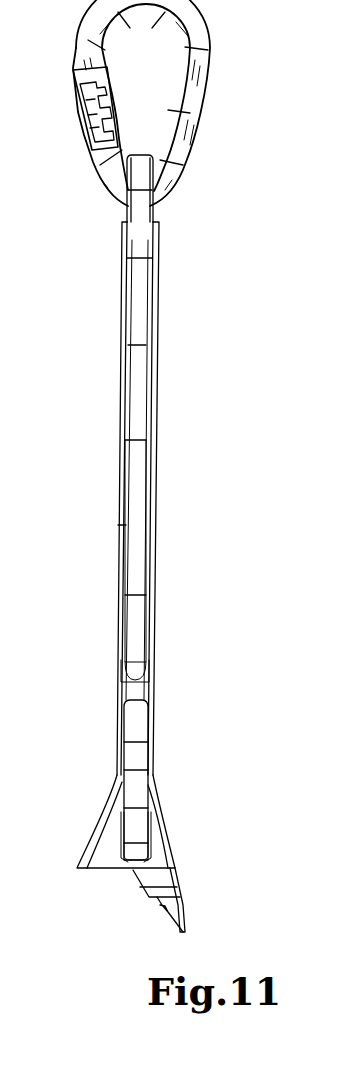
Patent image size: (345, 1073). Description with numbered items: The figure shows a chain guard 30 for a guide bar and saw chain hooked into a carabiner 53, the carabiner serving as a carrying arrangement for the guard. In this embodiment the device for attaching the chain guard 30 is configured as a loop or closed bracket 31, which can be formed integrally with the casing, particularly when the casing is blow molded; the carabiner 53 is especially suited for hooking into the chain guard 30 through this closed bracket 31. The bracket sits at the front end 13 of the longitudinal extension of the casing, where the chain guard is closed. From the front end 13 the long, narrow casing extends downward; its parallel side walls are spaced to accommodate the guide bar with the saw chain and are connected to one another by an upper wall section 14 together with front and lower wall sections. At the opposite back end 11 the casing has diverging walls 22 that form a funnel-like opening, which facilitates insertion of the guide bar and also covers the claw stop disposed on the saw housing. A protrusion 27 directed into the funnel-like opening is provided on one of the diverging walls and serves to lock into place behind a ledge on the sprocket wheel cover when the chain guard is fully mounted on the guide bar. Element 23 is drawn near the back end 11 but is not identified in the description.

The carabiner 53 is at (88, 34).
The front end 13 is at (134, 206).
The closed bracket 31 is at (141, 191).
The chain guard 30 is at (154, 465).
The upper wall section 14 is at (137, 472).
The back end 11 is at (163, 821).
The buckle 23 is at (137, 796).
The diverging wall 22 is at (102, 830).
The protrusion 27 is at (160, 912).